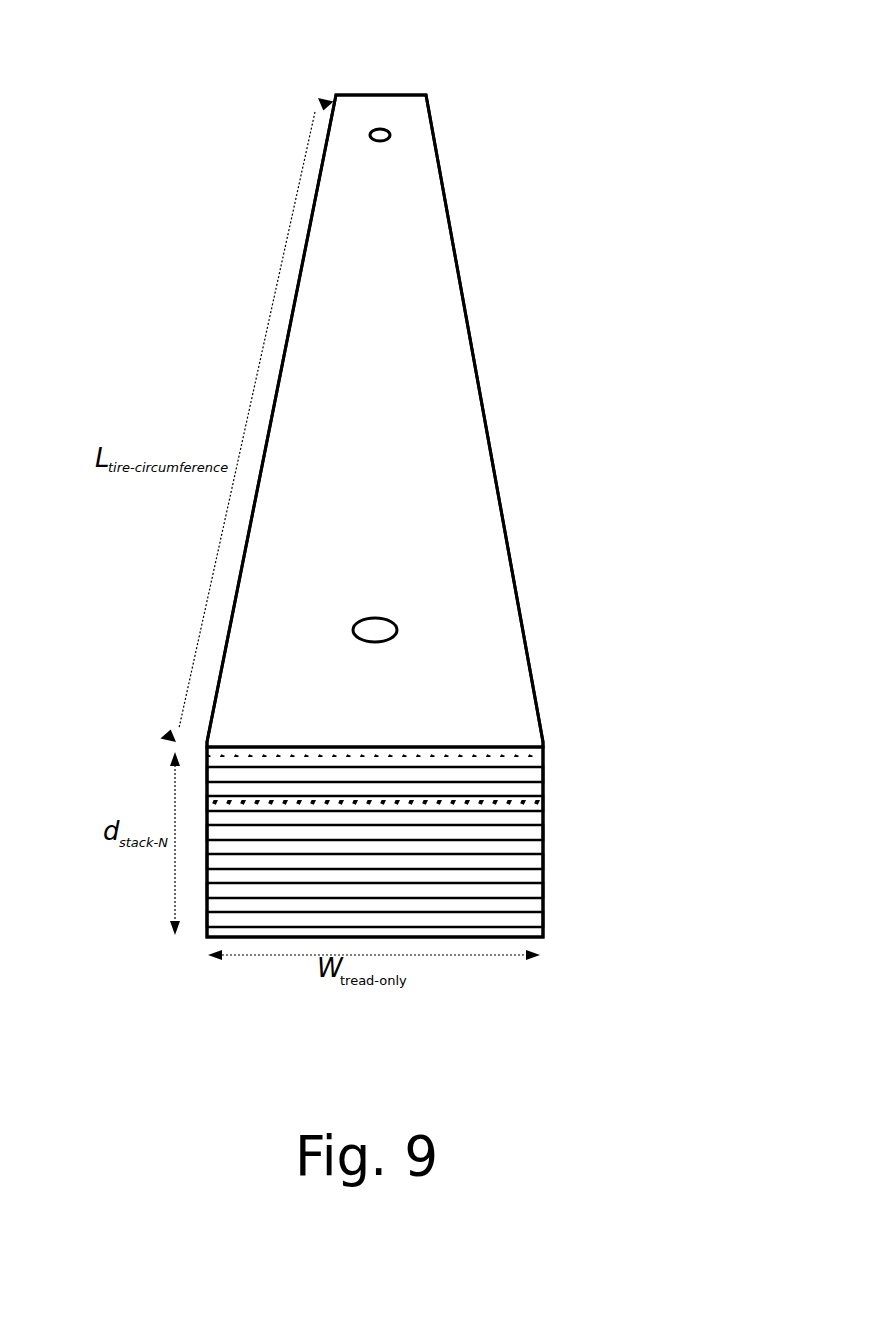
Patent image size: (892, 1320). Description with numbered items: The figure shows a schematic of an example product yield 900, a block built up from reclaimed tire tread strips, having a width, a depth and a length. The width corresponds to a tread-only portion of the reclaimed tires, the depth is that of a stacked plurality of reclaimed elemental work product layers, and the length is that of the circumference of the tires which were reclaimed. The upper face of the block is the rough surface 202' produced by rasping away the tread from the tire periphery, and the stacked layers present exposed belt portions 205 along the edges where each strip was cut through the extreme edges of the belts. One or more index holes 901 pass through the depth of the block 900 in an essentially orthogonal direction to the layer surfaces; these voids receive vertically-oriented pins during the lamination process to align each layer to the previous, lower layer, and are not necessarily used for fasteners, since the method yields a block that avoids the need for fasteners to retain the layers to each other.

The product yield block 900 is at (167, 154).
The index holes 901 is at (388, 130).
The rough surface 202' is at (409, 421).
The belts 205 is at (545, 775).